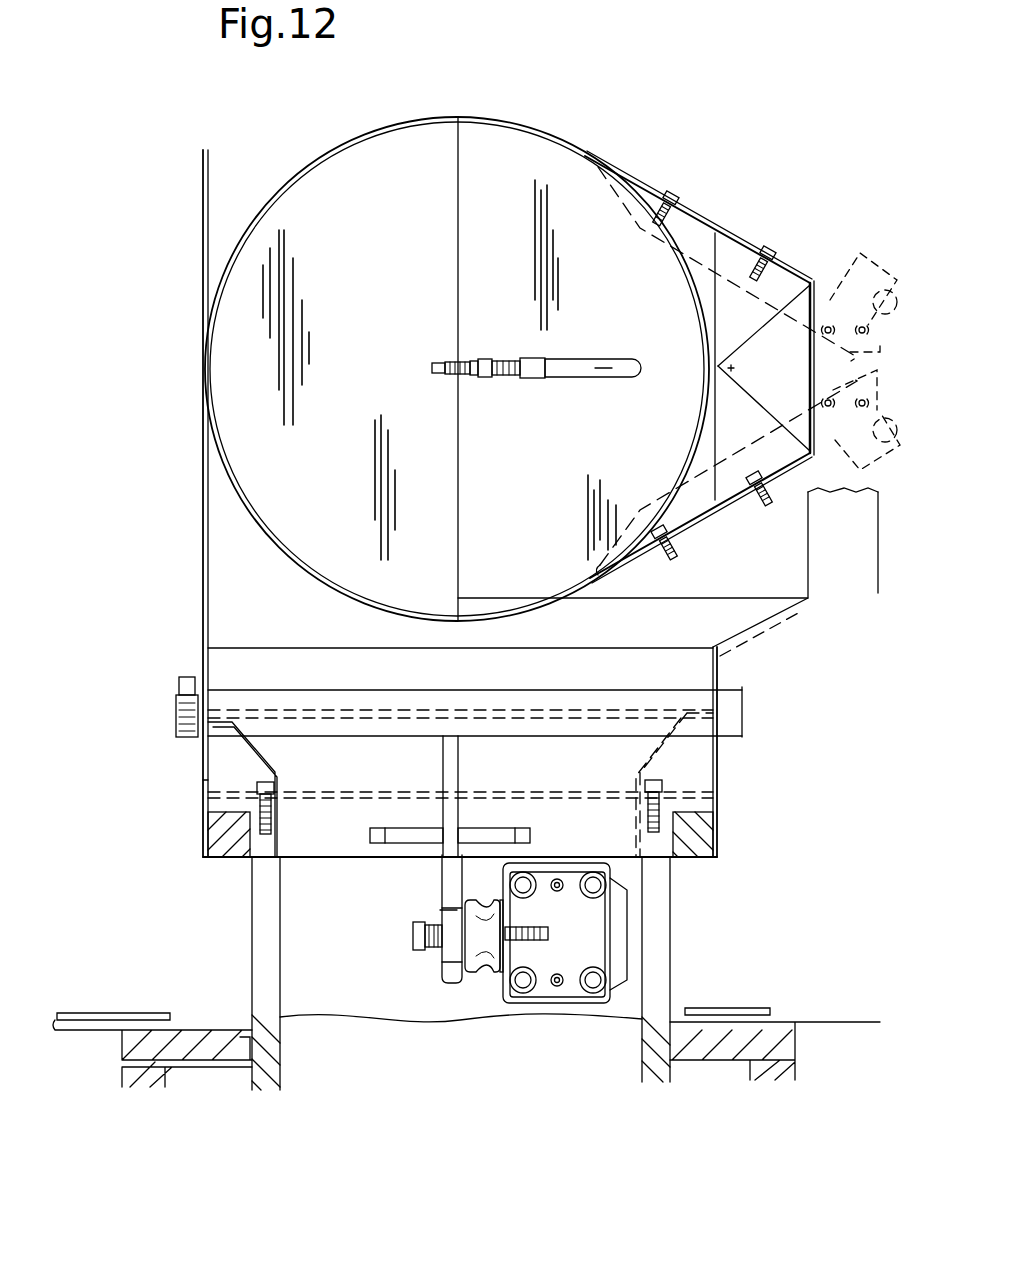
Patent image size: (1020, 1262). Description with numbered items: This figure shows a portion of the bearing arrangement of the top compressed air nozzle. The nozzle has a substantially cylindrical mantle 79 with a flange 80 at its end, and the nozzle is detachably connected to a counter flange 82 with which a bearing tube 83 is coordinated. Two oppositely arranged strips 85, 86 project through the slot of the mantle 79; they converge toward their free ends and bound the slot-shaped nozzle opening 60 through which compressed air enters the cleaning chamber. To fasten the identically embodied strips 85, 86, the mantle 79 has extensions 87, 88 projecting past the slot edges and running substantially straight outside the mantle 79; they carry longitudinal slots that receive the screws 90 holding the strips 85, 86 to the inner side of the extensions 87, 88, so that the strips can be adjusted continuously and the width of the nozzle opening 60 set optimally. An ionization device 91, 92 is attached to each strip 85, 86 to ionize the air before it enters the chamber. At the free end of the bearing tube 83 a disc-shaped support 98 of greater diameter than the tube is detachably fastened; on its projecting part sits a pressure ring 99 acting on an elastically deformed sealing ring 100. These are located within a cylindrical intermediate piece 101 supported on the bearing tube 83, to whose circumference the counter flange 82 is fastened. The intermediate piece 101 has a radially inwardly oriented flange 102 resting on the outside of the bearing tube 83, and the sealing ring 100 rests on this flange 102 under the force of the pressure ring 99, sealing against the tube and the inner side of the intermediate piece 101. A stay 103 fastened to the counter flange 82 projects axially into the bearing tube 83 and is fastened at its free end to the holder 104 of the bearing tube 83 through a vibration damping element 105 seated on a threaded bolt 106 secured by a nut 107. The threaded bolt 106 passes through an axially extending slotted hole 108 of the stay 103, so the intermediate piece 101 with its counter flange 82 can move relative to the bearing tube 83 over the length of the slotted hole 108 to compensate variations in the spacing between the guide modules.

The nozzle opening 60 is at (873, 363).
The mantle 79 is at (540, 128).
The flange 80 is at (245, 672).
The counter flange 82 is at (287, 727).
The bearing tube 83 is at (655, 908).
The strip 85 is at (625, 528).
The strip 86 is at (825, 310).
The extension 87 is at (652, 547).
The extension 88 is at (697, 212).
The screw 90 is at (668, 190).
The ionization device 91 is at (880, 410).
The ionization device 92 is at (875, 262).
The support 98 is at (555, 790).
The pressure ring 99 is at (250, 813).
The sealing ring 100 is at (225, 838).
The intermediate piece 101 is at (205, 780).
The flange 102 is at (700, 835).
The stay 103 is at (448, 768).
The holder 104 is at (588, 948).
The vibration damping element 105 is at (477, 960).
The threaded bolt 106 is at (430, 950).
The nut 107 is at (413, 928).
The slotted hole 108 is at (440, 912).